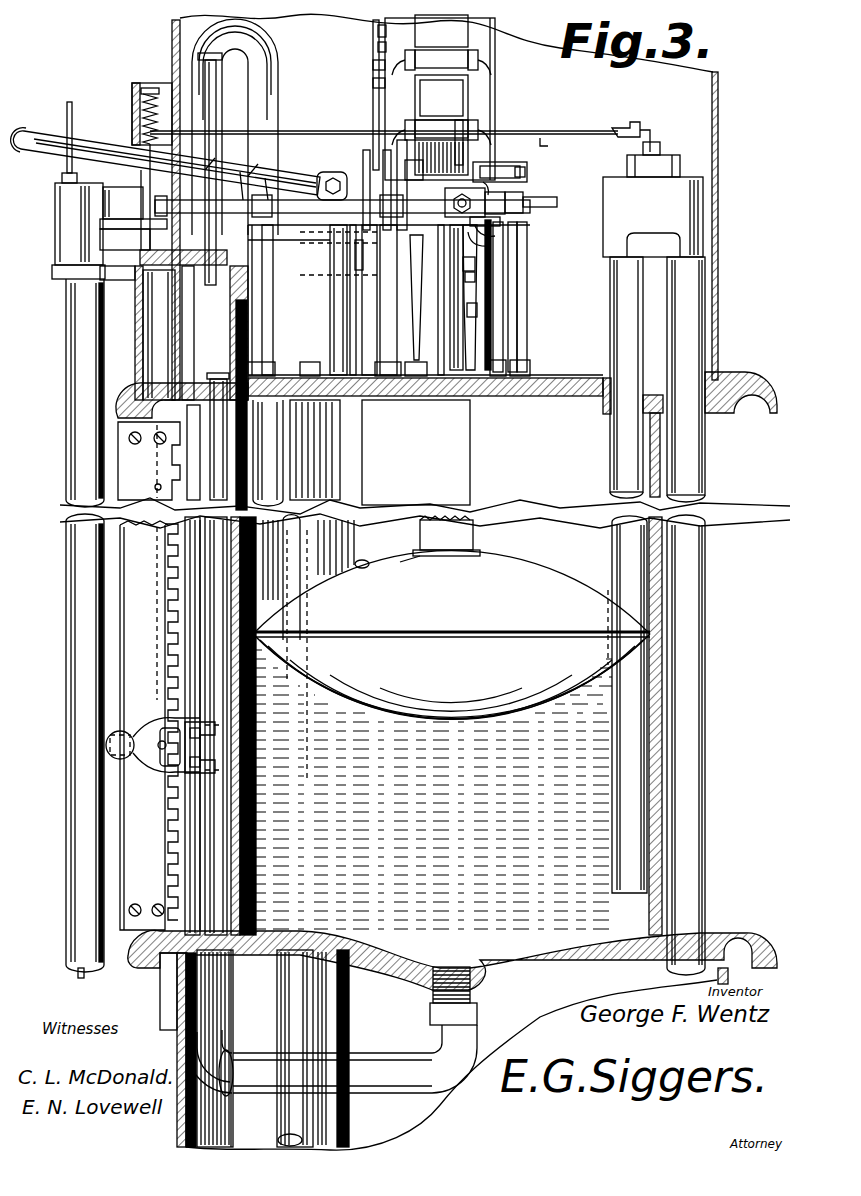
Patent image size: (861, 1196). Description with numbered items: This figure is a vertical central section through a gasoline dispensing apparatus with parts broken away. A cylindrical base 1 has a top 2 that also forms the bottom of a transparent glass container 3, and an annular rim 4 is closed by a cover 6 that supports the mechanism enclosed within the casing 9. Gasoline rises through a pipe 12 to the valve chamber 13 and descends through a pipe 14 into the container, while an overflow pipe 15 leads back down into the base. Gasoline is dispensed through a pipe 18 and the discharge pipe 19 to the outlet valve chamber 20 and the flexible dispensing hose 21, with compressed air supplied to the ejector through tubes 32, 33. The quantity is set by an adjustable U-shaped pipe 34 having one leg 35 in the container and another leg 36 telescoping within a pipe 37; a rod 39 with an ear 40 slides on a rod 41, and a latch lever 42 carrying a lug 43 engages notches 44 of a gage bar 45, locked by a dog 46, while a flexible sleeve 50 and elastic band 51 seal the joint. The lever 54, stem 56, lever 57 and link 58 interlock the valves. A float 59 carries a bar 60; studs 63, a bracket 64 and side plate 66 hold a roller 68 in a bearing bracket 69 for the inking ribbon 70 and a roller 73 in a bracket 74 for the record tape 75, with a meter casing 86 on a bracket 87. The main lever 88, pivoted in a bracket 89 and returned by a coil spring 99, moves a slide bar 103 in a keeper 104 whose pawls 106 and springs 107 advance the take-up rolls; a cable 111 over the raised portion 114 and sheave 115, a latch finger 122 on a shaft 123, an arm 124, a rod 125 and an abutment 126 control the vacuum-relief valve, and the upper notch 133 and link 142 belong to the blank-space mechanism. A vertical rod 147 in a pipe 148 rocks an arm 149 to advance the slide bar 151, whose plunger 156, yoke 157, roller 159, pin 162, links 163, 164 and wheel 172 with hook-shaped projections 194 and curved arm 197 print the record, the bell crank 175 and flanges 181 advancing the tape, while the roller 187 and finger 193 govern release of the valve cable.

The cylindrical base 1 is at (178, 1130).
The top 2 is at (620, 938).
The transparent glass container 3 is at (658, 718).
The annular rim 4 is at (660, 400).
The cover 6 is at (572, 386).
The casing 9 is at (172, 40).
The pipe 12 is at (695, 850).
The valve chamber 13 is at (690, 206).
The pipe 14 is at (635, 672).
The overflow pipe 15 is at (300, 600).
The pipe 18 is at (425, 1105).
The discharge pipe 19 is at (175, 338).
The valve chamber 20 is at (88, 210).
The flexible dispensing hose 21 is at (75, 804).
The tube 32 is at (80, 978).
The tube 33 is at (66, 110).
The adjustable U-shaped pipe 34 is at (258, 90).
The leg 35 is at (275, 453).
The leg 36 is at (165, 545).
The pipe 37 is at (168, 562).
The rod 39 is at (215, 109).
The ear 40 is at (200, 718).
The rod 41 is at (175, 598).
The latch lever 42 is at (150, 756).
The lug 43 is at (168, 770).
The notches 44 is at (175, 640).
The gage bar 45 is at (125, 628).
The dog 46 is at (108, 746).
The flexible sleeve 50 is at (205, 450).
The elastic band 51 is at (172, 446).
The lever 54 is at (96, 143).
The stem 56 is at (660, 150).
The lever 57 is at (636, 126).
The link 58 is at (556, 147).
The float 59 is at (520, 578).
The bar 60 is at (470, 30).
The studs 63 is at (518, 350).
The bracket 64 is at (425, 300).
The side plate 66 is at (490, 64).
The roller 68 is at (477, 298).
The bearing bracket 69 is at (492, 312).
The inking ribbon 70 is at (450, 92).
The roller 73 is at (477, 282).
The bracket 74 is at (475, 262).
The record tape 75 is at (440, 133).
The casing 86 is at (308, 236).
The bracket 87 is at (372, 314).
The main lever 88 is at (55, 150).
The bracket 89 is at (338, 300).
The coil spring 99 is at (150, 92).
The slide bar 103 is at (380, 30).
The keeper 104 is at (380, 48).
The pawls 106 is at (375, 68).
The springs 107 is at (375, 86).
The cord or cable 111 is at (207, 110).
The raised portion 114 is at (140, 270).
The sheave 115 is at (165, 225).
The latch finger 122 is at (170, 246).
The shaft 123 is at (305, 230).
The arm 124 is at (358, 250).
The rod 125 is at (362, 420).
The abutment 126 is at (385, 558).
The upper notch 133 is at (400, 340).
The link 142 is at (358, 232).
The vertical rod 147 is at (215, 305).
The pipe 148 is at (225, 862).
The arm 149 is at (241, 172).
The slide bar 151 is at (282, 198).
The plunger 156 is at (500, 220).
The yoke 157 is at (492, 151).
The roller 159 is at (525, 172).
The pin 162 is at (536, 203).
The links 163 is at (527, 335).
The links 164 is at (495, 232).
The wheel 172 is at (480, 240).
The bell crank 175 is at (343, 190).
The flanges 181 is at (403, 185).
The roller 187 is at (158, 204).
The finger 193 is at (268, 178).
The hook-shaped projections 194 is at (449, 198).
The curved arm 197 is at (490, 184).